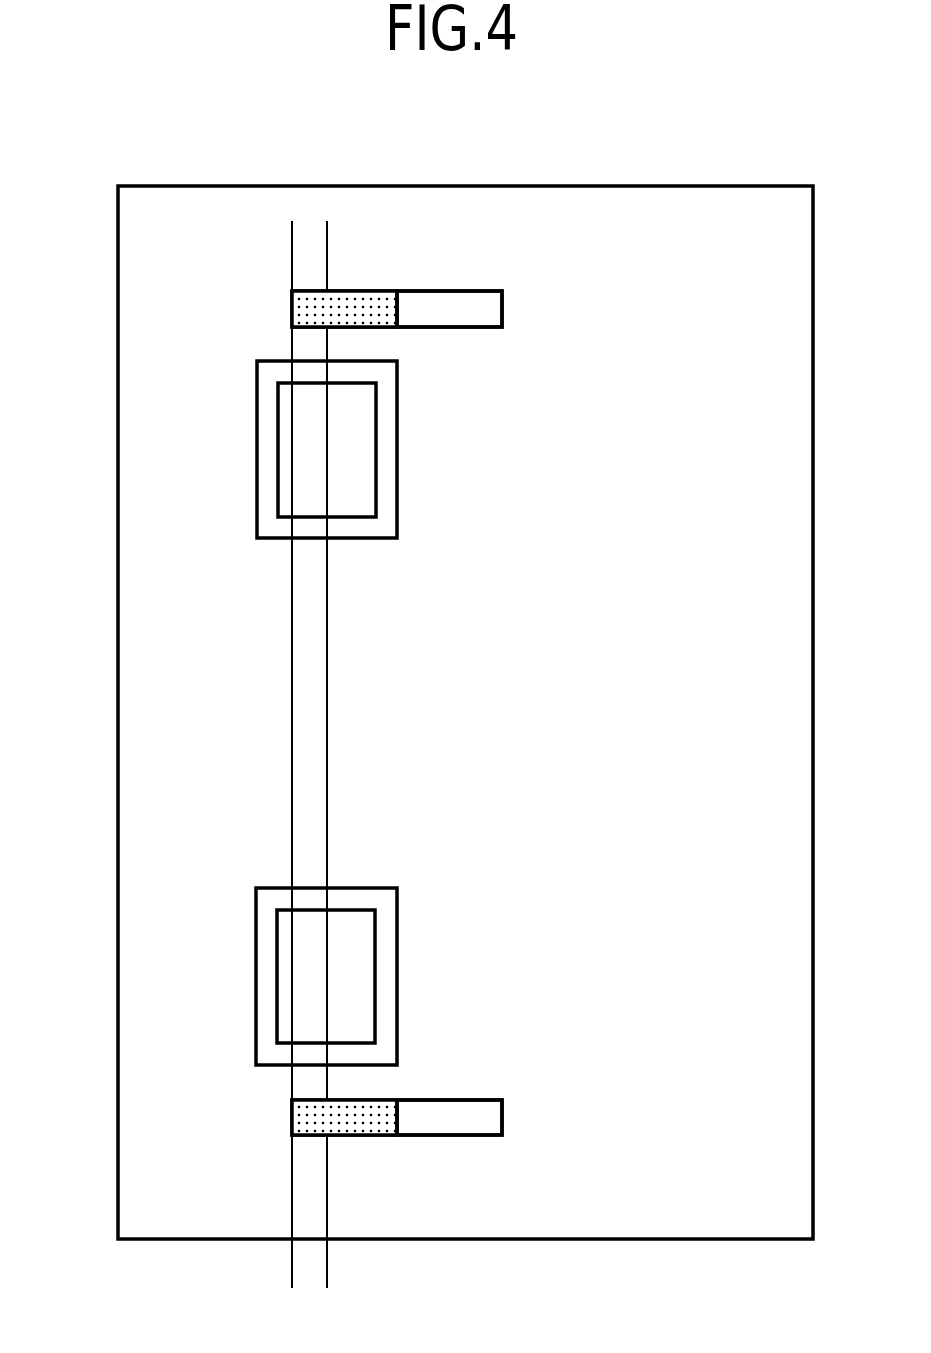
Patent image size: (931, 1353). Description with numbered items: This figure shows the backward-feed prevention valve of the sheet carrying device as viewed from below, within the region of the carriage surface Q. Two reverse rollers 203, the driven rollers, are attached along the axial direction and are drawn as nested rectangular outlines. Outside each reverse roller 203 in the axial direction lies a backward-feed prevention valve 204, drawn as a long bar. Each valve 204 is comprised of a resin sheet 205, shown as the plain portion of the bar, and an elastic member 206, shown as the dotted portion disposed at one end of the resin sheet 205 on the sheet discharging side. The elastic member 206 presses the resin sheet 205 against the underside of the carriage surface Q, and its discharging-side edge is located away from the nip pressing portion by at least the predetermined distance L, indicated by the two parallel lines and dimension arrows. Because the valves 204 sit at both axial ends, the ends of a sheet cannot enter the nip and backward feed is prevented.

The carriage surface Q is at (137, 1011).
The predetermined distance L is at (355, 1275).
The reverse roller 203 is at (365, 962).
The backward-feed prevention valve 204 is at (515, 1113).
The resin sheet 205 is at (453, 1138).
The elastic member 206 is at (353, 1138).